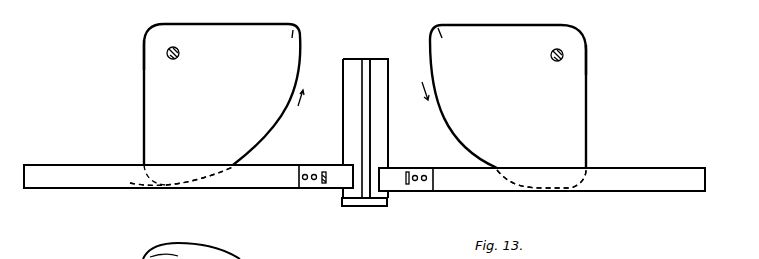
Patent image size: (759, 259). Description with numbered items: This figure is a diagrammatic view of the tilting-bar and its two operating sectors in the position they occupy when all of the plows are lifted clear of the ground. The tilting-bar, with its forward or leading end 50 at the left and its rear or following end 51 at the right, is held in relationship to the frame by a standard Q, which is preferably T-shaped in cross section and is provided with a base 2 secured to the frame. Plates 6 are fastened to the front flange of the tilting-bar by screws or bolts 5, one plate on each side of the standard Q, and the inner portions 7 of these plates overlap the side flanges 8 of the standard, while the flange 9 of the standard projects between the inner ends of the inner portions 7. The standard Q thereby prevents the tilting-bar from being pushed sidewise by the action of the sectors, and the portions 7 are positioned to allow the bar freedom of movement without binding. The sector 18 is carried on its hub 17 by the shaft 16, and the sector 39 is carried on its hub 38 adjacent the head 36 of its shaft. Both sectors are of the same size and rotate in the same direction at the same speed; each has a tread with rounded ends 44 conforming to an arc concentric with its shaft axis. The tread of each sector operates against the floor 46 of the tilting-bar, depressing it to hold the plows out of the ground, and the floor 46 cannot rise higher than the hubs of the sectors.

The base 2 is at (361, 204).
The screws or bolts 5 is at (424, 175).
The plates 6 is at (426, 184).
The inner portions 7 is at (334, 174).
The side flanges 8 is at (352, 115).
The flange 9 is at (362, 137).
The standard Q is at (377, 111).
The shaft 16 is at (551, 60).
The hub 17 is at (572, 47).
The sector 18 is at (504, 106).
The head 36 is at (177, 58).
The hub 38 is at (157, 43).
The sector 39 is at (217, 104).
The rounded ends 44 is at (366, 40).
The floor 46 is at (182, 186).
The forward or leading end 50 is at (95, 175).
The rear or following end 51 is at (650, 177).